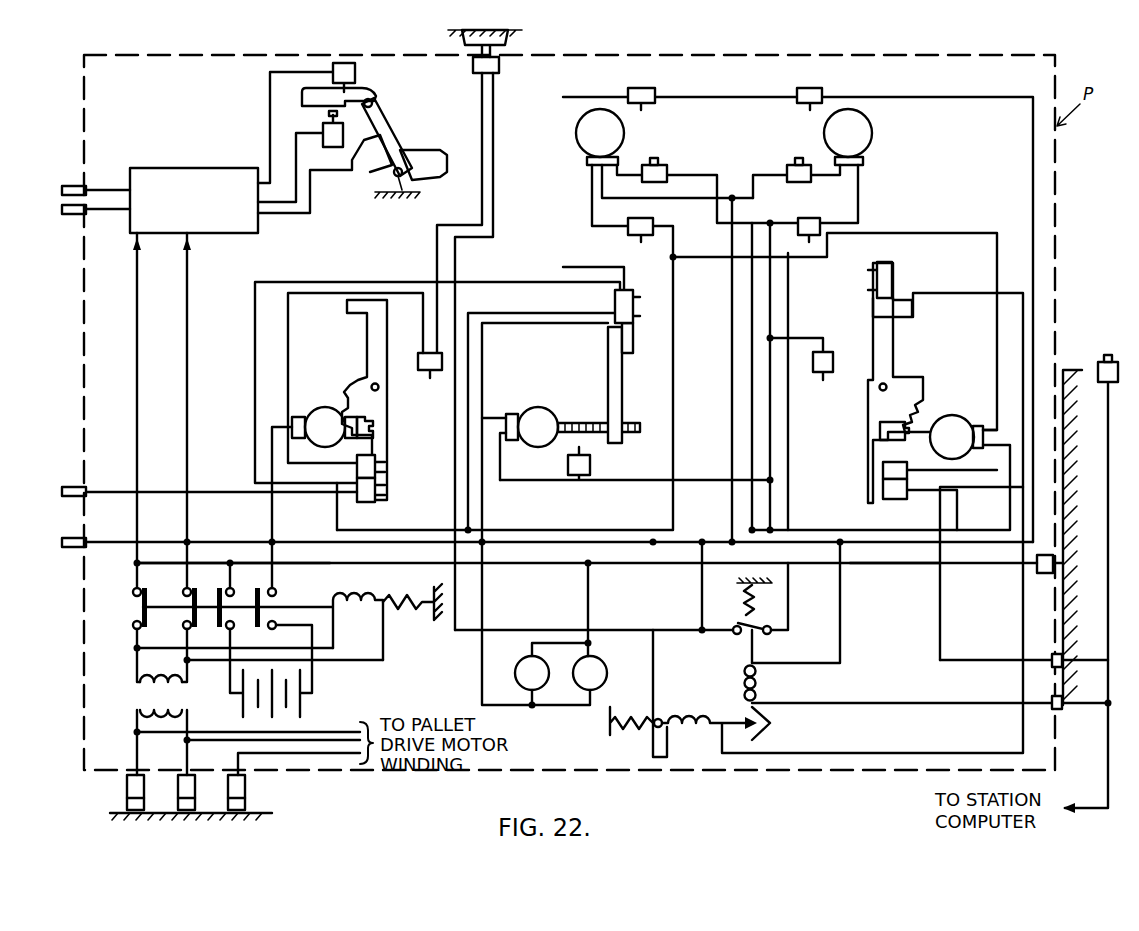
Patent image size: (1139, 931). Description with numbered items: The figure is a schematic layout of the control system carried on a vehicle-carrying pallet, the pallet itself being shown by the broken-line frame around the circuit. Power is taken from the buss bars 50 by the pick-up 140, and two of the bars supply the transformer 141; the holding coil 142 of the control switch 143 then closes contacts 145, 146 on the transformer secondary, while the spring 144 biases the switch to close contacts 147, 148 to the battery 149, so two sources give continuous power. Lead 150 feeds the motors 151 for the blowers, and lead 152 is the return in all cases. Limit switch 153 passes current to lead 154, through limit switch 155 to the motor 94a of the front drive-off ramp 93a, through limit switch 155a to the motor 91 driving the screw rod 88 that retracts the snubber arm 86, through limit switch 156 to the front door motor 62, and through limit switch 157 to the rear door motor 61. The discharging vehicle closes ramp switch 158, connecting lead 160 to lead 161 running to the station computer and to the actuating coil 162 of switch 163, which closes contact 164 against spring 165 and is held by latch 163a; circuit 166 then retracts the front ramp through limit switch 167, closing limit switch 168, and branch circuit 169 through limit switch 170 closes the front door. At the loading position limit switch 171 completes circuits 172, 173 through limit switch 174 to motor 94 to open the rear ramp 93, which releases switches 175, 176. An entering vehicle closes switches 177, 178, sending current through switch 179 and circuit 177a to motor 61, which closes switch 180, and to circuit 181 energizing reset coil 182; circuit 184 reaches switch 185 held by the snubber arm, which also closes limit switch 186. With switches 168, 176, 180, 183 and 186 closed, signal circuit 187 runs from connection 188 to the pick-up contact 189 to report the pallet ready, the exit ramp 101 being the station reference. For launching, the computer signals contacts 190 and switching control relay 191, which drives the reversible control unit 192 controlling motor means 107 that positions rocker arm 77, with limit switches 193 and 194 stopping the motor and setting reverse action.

The contacts 190 is at (62, 209).
The switching control relay 191 is at (178, 168).
The limit switch 194 is at (355, 72).
The limit switch 193 is at (372, 106).
The motor means 107 is at (395, 130).
The rocker arm 77 is at (420, 150).
The reversible control unit 192 is at (378, 160).
The limit switch 171 is at (499, 66).
The circuit 172 is at (495, 190).
The circuit 173 is at (482, 186).
The limit switch 174 is at (424, 370).
The signal circuit 187 is at (255, 418).
The run-on ramp 93 is at (367, 350).
The motor unit 94 is at (318, 408).
The limit switch 175 is at (378, 465).
The limit switch 176 is at (372, 500).
The pallet pick-up contact 189 is at (62, 488).
The circuit 184 is at (598, 530).
The motor 91 is at (538, 406).
The screw rod 88 is at (574, 420).
The snubber arm 86 is at (622, 385).
The switch 185 is at (633, 338).
The limit switch 186 is at (615, 302).
The limit switch 155a is at (590, 465).
The switch 180 is at (648, 88).
The switch 183 is at (812, 88).
The motor 61 is at (625, 132).
The motor 62 is at (872, 130).
The limit switch 157 is at (664, 168).
The limit switch 170 is at (787, 168).
The limit switch 156 is at (810, 222).
The switch 179 is at (628, 230).
The return lead 152 is at (665, 204).
The circuit 177a is at (676, 262).
The branch circuit 169 is at (750, 403).
The switch 177 is at (877, 269).
The switch 178 is at (885, 298).
The second ramp 93a is at (900, 362).
The motor 94a is at (955, 415).
The limit switch 155 is at (833, 378).
The limit switch 167 is at (883, 466).
The limit switch 168 is at (890, 499).
The circuit 181 is at (975, 300).
The vehicle exit ramp 101 is at (1068, 368).
The ramp switch 158 is at (1108, 356).
The lead 160 is at (945, 646).
The lead 161 is at (1106, 682).
The limit switch 153 is at (1043, 555).
The connection 188 is at (945, 562).
The lead 154 is at (882, 565).
The lead 150 is at (297, 563).
The circuit 166 is at (700, 603).
The spring 165 is at (737, 579).
The contact 164 is at (745, 620).
The switch 163 is at (741, 643).
The actuating coil 162 is at (760, 684).
The reset coil 182 is at (710, 713).
The latch 163a is at (768, 728).
The motors 151 is at (585, 658).
The holding coil 142 is at (364, 589).
The spring 144 is at (420, 615).
The battery 149 is at (323, 696).
The contact 145 is at (133, 592).
The contact 146 is at (183, 592).
The contact 147 is at (226, 592).
The contact 148 is at (268, 592).
The control switch 143 is at (123, 630).
The transformer 141 is at (123, 697).
The pick-up 140 is at (127, 799).
The buss bars 50 is at (235, 814).